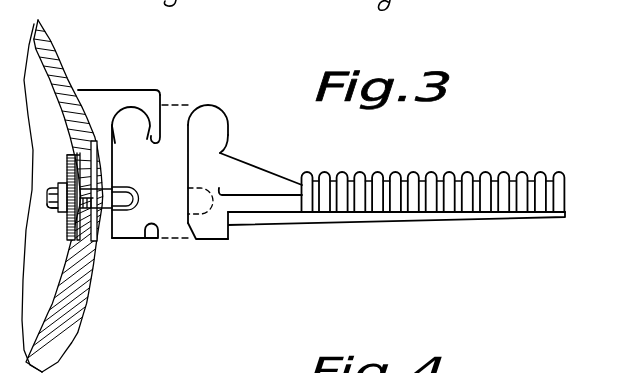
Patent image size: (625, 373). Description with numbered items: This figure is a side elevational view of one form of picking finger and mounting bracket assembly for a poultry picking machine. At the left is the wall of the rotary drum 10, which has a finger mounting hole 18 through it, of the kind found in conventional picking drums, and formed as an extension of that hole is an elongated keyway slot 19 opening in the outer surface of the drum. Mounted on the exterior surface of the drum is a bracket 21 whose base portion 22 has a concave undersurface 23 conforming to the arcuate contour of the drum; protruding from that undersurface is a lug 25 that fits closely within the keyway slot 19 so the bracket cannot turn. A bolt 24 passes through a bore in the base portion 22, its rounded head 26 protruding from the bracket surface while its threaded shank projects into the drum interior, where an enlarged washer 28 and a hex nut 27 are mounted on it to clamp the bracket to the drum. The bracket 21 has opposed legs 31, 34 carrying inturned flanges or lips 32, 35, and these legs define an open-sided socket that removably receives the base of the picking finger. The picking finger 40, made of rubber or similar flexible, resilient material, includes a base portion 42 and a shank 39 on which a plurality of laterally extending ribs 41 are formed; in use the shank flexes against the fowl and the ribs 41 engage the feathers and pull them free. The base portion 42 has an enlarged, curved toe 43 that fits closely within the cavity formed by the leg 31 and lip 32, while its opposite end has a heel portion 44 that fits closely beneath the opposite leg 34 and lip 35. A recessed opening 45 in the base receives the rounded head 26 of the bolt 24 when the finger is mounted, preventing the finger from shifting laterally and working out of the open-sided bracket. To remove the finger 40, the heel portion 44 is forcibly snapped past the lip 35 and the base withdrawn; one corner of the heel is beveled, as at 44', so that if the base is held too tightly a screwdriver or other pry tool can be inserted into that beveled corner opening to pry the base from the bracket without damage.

The rotary drum 10 is at (58, 52).
The hole 18 is at (97, 241).
The keyway slot 19 is at (80, 153).
The bracket 21 is at (126, 89).
The base portion 22 is at (115, 130).
The concave undersurface 23 is at (110, 119).
The bolt 24 is at (49, 210).
The lug 25 is at (92, 159).
The rounded head 26 is at (138, 187).
The hex nut 27 is at (56, 183).
The washer 28 is at (68, 242).
The leg 31 is at (134, 90).
The inturned flange or lip 32 is at (163, 100).
The leg 34 is at (137, 240).
The inturned flange or lip 35 is at (160, 231).
The shank 39 is at (405, 207).
The picking finger 40 is at (473, 171).
The ribs 41 is at (342, 173).
The base portion 42 is at (221, 147).
The curved toe 43 is at (222, 119).
The heel portion 44 is at (381, 236).
The beveled corner 44' is at (227, 255).
The recessed opening 45 is at (207, 188).